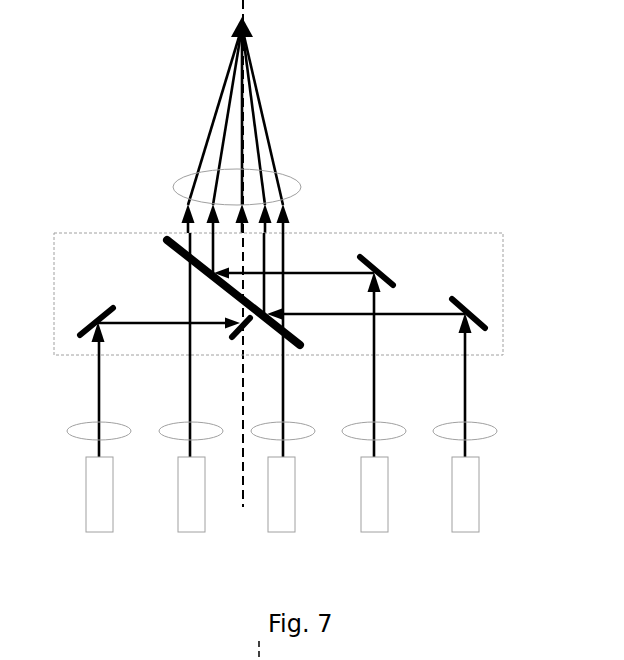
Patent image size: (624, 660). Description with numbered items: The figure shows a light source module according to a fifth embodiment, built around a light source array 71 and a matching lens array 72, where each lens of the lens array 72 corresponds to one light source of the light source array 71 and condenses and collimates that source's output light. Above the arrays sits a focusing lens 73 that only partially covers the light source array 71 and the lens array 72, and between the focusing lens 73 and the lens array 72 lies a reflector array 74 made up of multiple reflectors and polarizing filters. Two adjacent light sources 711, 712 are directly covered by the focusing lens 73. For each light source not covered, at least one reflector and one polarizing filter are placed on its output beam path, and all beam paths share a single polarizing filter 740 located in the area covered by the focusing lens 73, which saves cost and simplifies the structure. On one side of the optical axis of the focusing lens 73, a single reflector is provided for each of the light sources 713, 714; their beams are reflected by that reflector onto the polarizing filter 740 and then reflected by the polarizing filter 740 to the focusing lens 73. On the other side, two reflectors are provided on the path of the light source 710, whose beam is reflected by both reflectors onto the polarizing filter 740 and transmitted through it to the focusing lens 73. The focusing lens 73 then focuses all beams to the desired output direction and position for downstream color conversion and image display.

The light source array 71 is at (479, 499).
The lens array 72 is at (497, 430).
The focusing lens 73 is at (300, 187).
The reflector array 74 is at (503, 297).
The polarizing filter 740 is at (167, 237).
The light source 710 is at (100, 532).
The light source 711 is at (190, 532).
The light source 712 is at (282, 532).
The light source 713 is at (375, 532).
The light source 714 is at (508, 470).